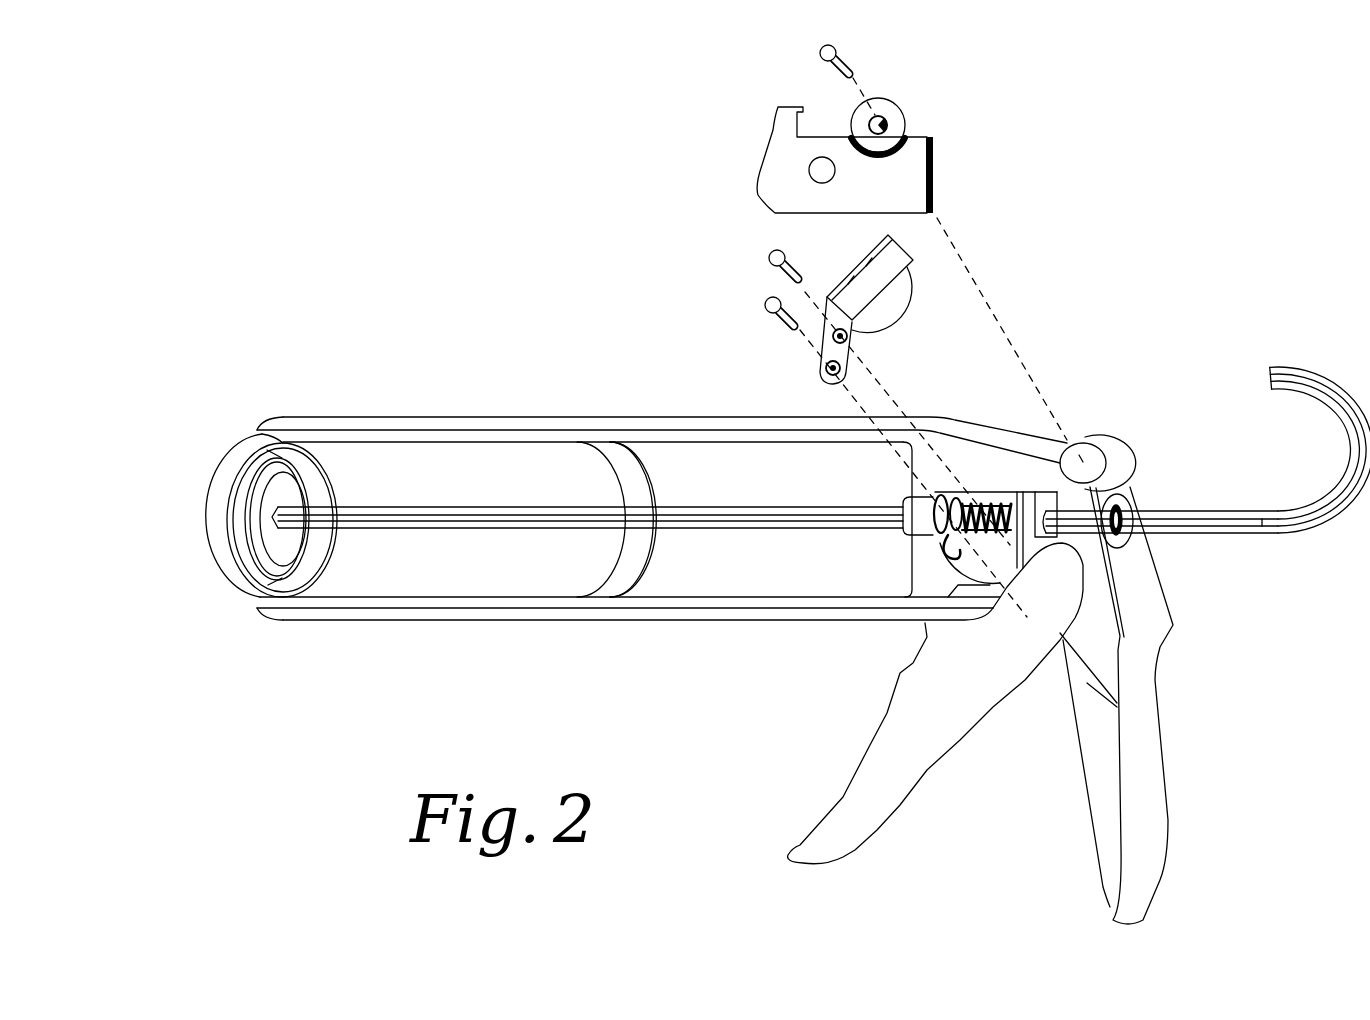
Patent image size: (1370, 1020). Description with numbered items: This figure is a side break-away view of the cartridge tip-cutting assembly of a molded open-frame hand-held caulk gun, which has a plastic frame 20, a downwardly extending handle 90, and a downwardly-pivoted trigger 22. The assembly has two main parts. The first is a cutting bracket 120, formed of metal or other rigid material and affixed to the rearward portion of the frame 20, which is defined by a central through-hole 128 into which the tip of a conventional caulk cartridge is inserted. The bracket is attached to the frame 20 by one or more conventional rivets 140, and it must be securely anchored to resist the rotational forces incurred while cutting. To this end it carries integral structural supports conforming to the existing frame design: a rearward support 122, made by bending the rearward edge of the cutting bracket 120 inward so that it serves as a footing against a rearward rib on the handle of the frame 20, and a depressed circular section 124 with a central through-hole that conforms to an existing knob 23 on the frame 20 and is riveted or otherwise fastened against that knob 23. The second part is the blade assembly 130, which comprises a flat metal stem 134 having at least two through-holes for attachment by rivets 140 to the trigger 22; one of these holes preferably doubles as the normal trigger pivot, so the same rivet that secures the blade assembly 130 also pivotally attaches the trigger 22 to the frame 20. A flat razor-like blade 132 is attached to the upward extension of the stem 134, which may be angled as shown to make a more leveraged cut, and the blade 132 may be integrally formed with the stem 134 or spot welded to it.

The frame 20 is at (947, 417).
The trigger 22 is at (837, 783).
The knob 23 is at (1133, 458).
The handle 90 is at (1165, 880).
The cutting bracket 120 is at (887, 143).
The rearward support 122 is at (933, 166).
The depressed circular section 124 is at (902, 113).
The central through-hole 128 is at (835, 172).
The blade assembly 130 is at (938, 309).
The blade 132 is at (877, 287).
The stem 134 is at (908, 288).
The rivets 140 is at (768, 299).